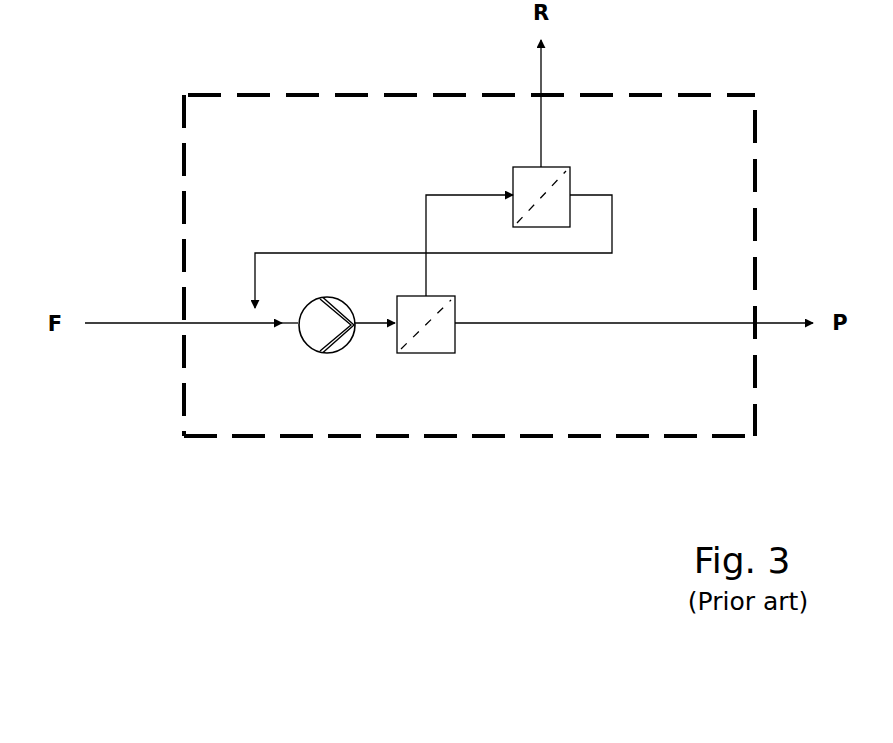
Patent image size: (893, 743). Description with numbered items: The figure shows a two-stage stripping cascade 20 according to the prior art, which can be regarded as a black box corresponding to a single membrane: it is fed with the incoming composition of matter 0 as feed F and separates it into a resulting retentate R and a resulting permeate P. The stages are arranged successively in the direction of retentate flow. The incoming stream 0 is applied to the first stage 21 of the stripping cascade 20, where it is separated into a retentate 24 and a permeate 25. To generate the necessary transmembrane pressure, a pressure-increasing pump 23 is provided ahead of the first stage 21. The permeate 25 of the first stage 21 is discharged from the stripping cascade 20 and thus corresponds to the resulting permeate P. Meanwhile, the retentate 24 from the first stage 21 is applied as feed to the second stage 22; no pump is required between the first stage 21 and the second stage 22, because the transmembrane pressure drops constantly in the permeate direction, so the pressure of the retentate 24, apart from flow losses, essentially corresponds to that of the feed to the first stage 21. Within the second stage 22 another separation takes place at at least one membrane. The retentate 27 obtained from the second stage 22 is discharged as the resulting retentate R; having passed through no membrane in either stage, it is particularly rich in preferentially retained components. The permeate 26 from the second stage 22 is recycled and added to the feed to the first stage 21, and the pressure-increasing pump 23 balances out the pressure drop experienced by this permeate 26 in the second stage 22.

The composition of matter 0 is at (157, 322).
The stripping cascade 20 is at (184, 123).
The first stage 21 is at (455, 338).
The second stage 22 is at (513, 167).
The pressure-increasing pump 23 is at (308, 343).
The retentate 24 is at (426, 223).
The permeate 25 is at (542, 323).
The permeate 26 is at (612, 223).
The retentate 27 is at (541, 137).